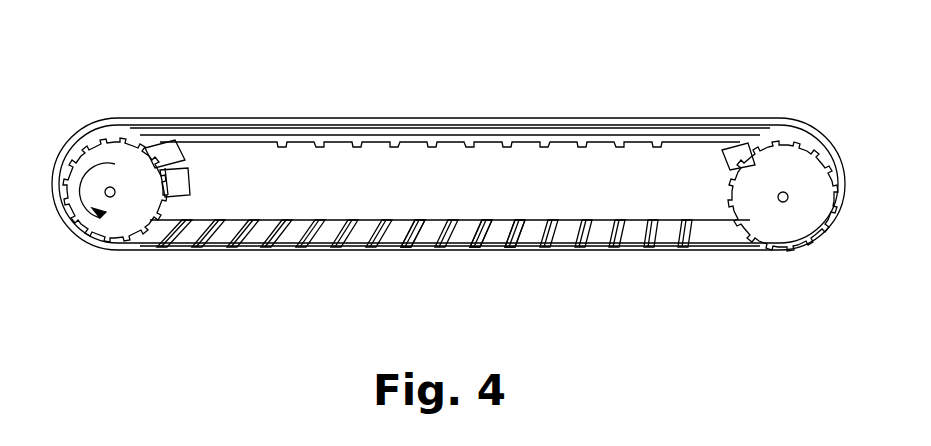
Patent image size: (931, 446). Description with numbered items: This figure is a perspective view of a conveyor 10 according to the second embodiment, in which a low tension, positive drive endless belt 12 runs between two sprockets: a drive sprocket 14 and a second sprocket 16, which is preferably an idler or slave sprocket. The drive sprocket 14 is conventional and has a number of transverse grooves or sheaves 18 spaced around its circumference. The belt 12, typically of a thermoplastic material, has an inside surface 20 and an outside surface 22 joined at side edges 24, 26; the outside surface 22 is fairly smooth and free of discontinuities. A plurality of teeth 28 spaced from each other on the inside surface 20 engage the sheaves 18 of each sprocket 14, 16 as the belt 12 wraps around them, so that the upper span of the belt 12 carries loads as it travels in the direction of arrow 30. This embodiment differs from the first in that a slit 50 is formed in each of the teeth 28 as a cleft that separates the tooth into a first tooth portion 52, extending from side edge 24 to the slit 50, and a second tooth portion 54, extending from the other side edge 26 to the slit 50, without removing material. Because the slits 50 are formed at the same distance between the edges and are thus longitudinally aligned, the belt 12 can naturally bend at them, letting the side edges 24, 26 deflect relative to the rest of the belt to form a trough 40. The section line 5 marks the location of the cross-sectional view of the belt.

The conveyor 10 is at (590, 36).
The endless belt 12 is at (271, 117).
The drive sprocket 14 is at (127, 217).
The sprocket 16 is at (796, 224).
The sheaves 18 is at (218, 180).
The inside surface 20 is at (612, 240).
The outside surface 22 is at (594, 122).
The side edge 24 is at (378, 117).
The side edge 26 is at (341, 145).
The teeth 28 is at (352, 252).
The arrow 30 is at (77, 212).
The trough 40 is at (672, 125).
The slit 50 is at (425, 235).
The first tooth portion 52 is at (520, 240).
The second tooth portion 54 is at (507, 246).
The section line 5- 5 is at (475, 118).